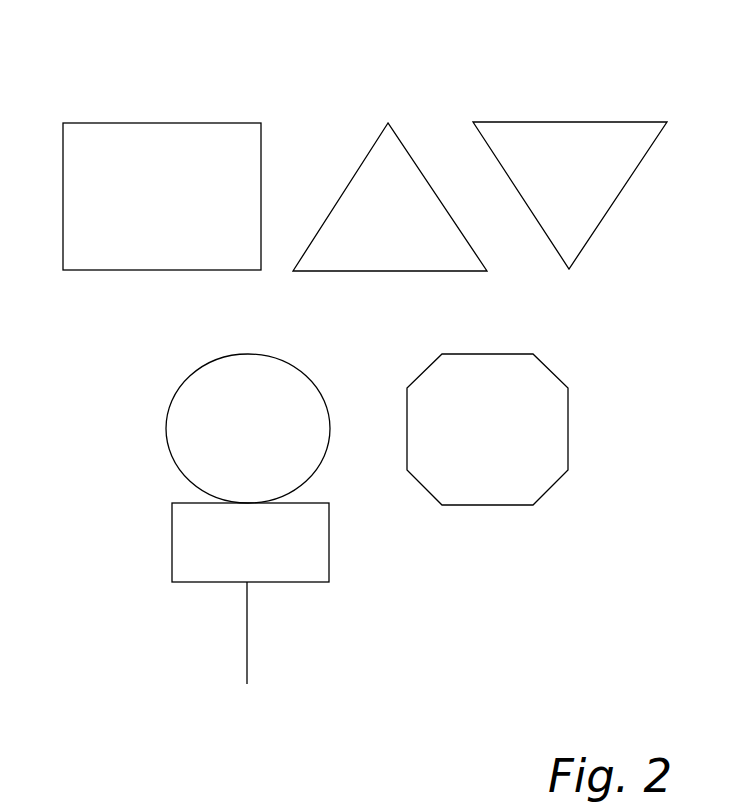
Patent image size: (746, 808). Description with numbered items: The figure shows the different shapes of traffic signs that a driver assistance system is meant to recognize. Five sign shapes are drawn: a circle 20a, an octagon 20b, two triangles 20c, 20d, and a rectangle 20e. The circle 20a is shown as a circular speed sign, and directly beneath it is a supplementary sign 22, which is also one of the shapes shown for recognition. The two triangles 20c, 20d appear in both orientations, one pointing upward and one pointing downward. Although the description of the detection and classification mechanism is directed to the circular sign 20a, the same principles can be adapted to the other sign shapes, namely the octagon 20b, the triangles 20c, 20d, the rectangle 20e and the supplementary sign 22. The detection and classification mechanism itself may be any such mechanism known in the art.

The rectangle 20e is at (140, 123).
The triangle 20d is at (378, 130).
The triangle 20c is at (563, 122).
The circle 20a is at (165, 408).
The octagon 20b is at (560, 383).
The supplementary sign 22 is at (172, 528).